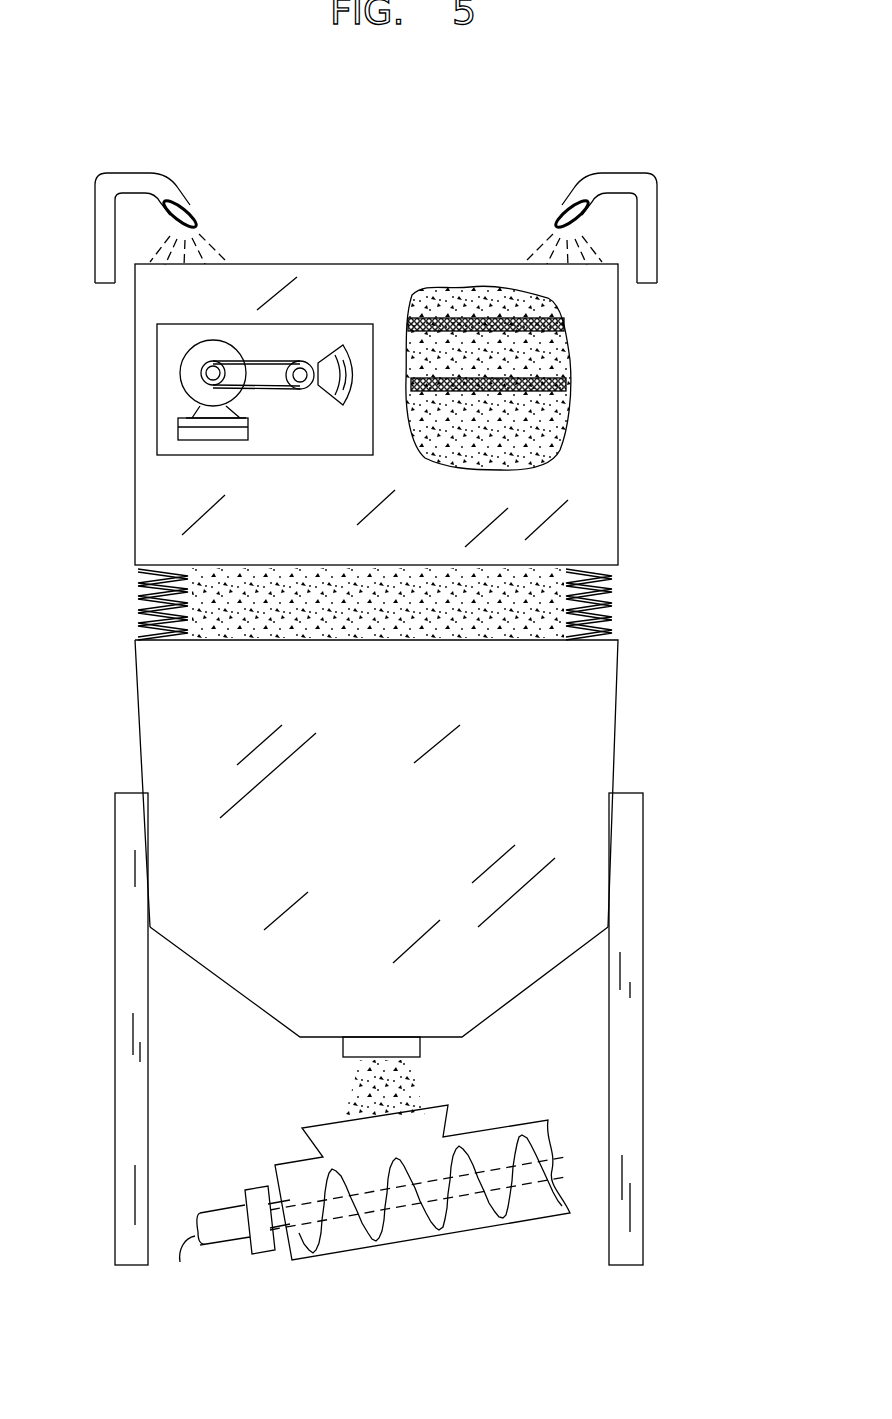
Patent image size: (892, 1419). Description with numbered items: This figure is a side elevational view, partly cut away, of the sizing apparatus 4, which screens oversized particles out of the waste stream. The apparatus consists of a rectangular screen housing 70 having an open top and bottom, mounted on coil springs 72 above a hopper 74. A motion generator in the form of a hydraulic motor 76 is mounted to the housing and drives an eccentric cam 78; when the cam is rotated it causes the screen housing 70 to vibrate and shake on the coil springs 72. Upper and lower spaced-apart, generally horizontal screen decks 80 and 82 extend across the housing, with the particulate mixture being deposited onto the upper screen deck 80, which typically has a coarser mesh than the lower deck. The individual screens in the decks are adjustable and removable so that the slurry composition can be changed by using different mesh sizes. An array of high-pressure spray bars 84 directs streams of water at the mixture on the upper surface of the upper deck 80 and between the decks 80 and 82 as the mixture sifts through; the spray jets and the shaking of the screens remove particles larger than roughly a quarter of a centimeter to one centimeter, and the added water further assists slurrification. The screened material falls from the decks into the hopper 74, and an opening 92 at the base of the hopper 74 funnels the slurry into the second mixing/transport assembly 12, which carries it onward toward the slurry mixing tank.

The sizing apparatus 4 is at (660, 405).
The second mixing/transport assembly 12 is at (540, 1220).
The screen housing 70 is at (618, 528).
The coil springs 72 is at (612, 617).
The hopper 74 is at (612, 718).
The hydraulic motor 76 is at (190, 367).
The eccentric cam 78 is at (332, 357).
The upper screen deck 80 is at (543, 307).
The lower screen deck 82 is at (543, 393).
The high-pressure spray bars 84 is at (584, 220).
The opening 92 is at (272, 1015).